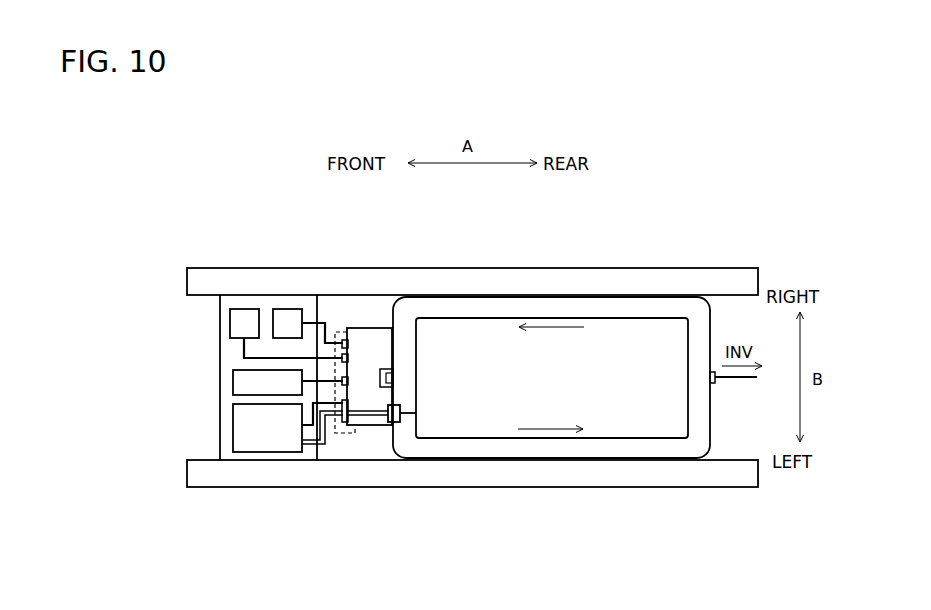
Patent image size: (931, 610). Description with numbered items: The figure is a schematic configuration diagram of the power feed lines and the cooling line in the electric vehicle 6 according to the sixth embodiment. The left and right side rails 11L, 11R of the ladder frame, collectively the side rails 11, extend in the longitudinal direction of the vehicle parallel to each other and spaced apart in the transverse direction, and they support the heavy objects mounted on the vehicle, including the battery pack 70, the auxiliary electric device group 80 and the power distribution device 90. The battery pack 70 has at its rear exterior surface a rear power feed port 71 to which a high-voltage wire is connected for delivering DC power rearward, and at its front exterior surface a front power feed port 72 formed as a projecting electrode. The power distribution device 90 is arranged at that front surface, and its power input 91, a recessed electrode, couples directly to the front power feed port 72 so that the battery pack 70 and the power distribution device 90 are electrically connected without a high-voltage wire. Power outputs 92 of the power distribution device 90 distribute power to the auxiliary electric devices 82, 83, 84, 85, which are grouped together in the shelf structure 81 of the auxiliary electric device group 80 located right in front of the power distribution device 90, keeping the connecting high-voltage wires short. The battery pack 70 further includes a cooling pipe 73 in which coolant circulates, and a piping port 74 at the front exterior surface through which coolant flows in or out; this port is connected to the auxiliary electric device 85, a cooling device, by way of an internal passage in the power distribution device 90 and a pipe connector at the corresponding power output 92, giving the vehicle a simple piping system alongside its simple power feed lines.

The electric vehicle 6 is at (174, 215).
The side rails 11 is at (165, 332).
The right side rail 11R is at (199, 297).
The left side rail 11L is at (200, 459).
The battery pack 70 is at (488, 310).
The rear power feed port 71 is at (713, 383).
The front power feed port 72 is at (406, 310).
The cooling pipe 73 is at (530, 439).
The piping port 74 is at (397, 423).
The auxiliary electric device group 80 is at (315, 222).
The shelf structure 81 is at (248, 313).
The auxiliary electric device 82 is at (252, 357).
The auxiliary electric device 83 is at (290, 312).
The auxiliary electric device 84 is at (248, 388).
The auxiliary electric device (cooling device) 85 is at (285, 438).
The power distribution device 90 is at (362, 328).
The power input 91 is at (385, 368).
The power outputs 92 is at (340, 434).